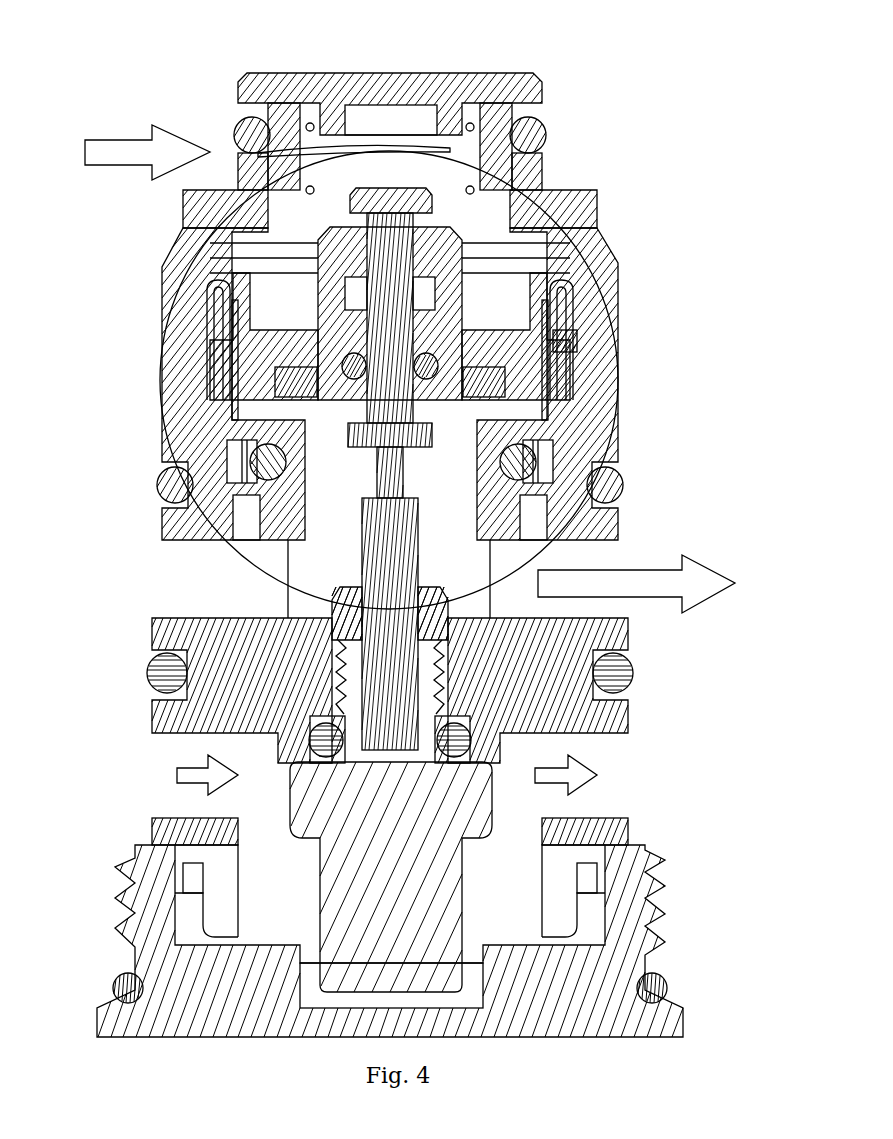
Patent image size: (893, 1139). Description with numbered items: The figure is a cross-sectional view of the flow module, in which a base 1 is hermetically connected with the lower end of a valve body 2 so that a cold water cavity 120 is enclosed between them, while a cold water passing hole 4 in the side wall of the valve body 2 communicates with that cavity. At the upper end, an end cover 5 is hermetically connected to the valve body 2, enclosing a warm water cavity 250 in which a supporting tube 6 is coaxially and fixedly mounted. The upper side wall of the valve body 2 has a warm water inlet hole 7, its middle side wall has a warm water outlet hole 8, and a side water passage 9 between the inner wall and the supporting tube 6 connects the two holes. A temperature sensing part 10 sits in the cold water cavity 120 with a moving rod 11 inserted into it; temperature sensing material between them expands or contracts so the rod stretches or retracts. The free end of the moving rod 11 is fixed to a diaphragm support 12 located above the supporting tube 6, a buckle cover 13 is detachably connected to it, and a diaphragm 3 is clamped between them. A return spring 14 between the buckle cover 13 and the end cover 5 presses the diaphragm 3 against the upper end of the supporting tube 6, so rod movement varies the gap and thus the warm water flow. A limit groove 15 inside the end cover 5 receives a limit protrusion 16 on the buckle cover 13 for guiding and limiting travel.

The base 1 is at (135, 920).
The valve body 2 is at (160, 528).
The diaphragm 3 is at (205, 298).
The cold water passing hole 4 is at (612, 786).
The end cover 5 is at (597, 203).
The supporting tube 6 is at (520, 527).
The warm water inlet hole 7 is at (162, 410).
The warm water outlet hole 8 is at (606, 608).
The side water passage 9 is at (245, 513).
The temperature sensing part 10 is at (347, 888).
The moving rod 11 is at (370, 562).
The diaphragm support 12 is at (540, 346).
The buckle cover 13 is at (430, 245).
The return spring 14 is at (312, 122).
The limit groove 15 is at (394, 120).
The limit protrusion 16 is at (383, 200).
The cold water cavity 120 is at (122, 693).
The warm water cavity 250 is at (106, 268).